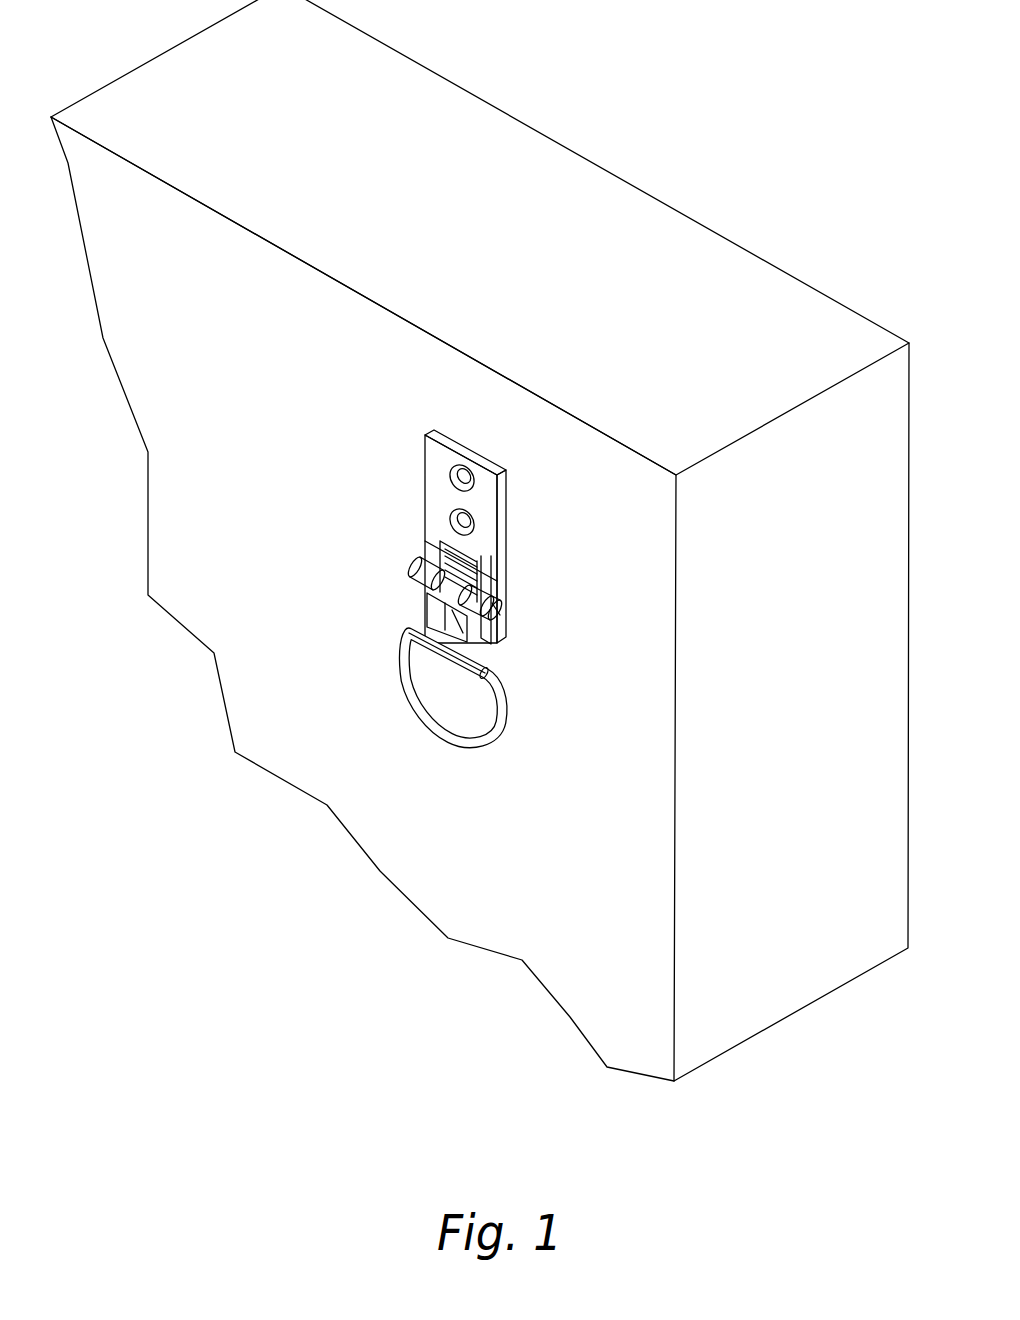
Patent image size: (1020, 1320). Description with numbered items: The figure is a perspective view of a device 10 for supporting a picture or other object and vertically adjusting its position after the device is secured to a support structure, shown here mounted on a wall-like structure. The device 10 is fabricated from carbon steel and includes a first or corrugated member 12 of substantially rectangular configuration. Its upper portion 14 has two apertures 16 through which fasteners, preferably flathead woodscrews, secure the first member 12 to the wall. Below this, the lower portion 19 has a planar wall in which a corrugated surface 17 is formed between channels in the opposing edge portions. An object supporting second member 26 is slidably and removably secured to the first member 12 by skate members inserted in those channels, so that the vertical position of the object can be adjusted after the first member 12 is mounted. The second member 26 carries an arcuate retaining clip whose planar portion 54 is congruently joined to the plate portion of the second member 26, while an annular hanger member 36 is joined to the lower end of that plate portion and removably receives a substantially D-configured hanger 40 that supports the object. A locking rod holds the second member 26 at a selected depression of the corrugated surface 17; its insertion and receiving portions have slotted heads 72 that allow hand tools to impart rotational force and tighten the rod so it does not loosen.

The device 10 is at (562, 438).
The first or corrugated member 12 is at (483, 475).
The upper portion 14 is at (432, 508).
The apertures 16 is at (456, 462).
The corrugated surface 17 is at (495, 586).
The lower portion 19 is at (440, 545).
The object supporting second member 26 is at (432, 607).
The annular hanger member 36 is at (447, 650).
The hanger 40 is at (403, 680).
The planar portion 54 is at (500, 658).
The slotted heads 72 is at (413, 560).